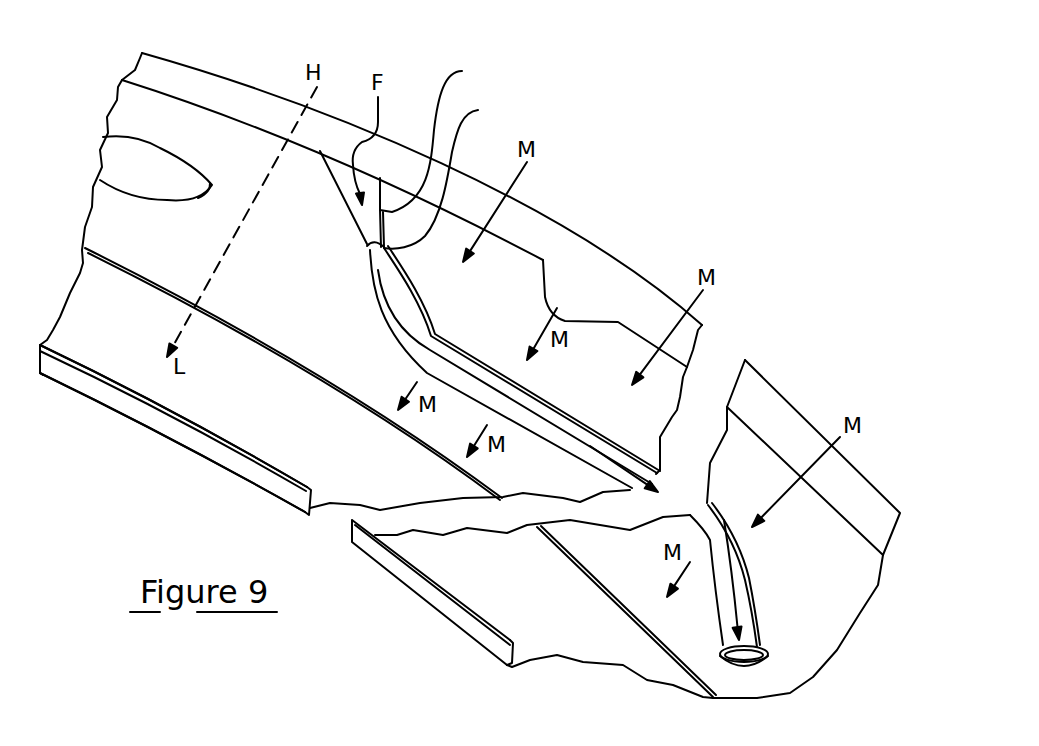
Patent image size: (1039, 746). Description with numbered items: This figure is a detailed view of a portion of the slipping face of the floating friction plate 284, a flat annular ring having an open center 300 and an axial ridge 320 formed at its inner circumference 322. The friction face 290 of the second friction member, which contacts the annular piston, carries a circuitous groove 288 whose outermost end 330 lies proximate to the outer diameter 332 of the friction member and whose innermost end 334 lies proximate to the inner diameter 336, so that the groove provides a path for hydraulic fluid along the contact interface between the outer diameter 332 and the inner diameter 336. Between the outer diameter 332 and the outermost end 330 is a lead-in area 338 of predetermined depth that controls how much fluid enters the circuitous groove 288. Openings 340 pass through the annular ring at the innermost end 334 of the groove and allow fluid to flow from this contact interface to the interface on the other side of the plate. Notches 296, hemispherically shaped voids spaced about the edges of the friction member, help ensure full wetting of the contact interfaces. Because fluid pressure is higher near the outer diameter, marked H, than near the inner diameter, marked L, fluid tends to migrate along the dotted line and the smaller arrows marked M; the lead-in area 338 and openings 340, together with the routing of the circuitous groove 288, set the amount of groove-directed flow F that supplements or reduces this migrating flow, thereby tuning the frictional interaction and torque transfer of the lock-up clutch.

The outer diameter 332 is at (180, 100).
The lead-in area 338 is at (462, 71).
The outermost end 330 is at (478, 110).
The notches 296 is at (545, 275).
The inner diameter 336 is at (113, 264).
The inner circumference 322 is at (120, 412).
The open center 300 is at (157, 470).
The axial ridge 320 is at (253, 466).
The friction face 290 is at (813, 510).
The circuitous groove 288 is at (757, 609).
The innermost end 334 is at (760, 645).
The openings 340 is at (770, 660).
The friction plate 284 is at (275, 745).